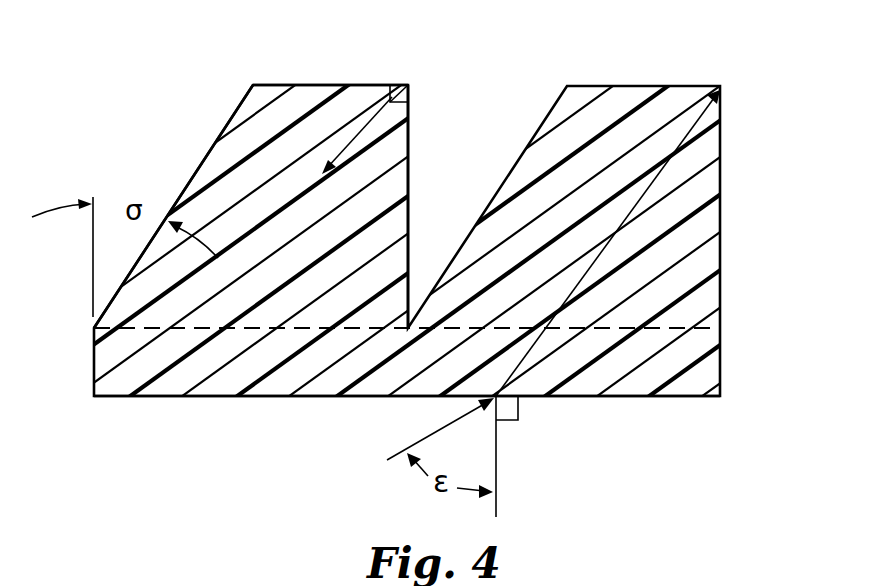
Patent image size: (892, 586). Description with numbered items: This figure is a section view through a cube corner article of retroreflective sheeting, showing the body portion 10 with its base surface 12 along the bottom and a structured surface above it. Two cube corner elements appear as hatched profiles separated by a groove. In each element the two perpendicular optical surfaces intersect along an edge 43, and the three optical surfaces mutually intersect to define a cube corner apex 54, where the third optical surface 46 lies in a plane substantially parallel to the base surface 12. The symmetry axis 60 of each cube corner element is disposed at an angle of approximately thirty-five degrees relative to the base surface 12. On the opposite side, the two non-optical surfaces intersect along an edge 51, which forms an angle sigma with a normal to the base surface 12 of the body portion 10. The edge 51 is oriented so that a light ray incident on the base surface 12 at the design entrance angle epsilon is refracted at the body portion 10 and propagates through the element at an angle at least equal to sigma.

The body portion 10 is at (720, 352).
The base surface 12 is at (653, 397).
The edge 43 is at (410, 137).
The third optical surface 46 is at (278, 85).
The edge 51 is at (202, 163).
The cube corner apex 54 is at (408, 85).
The symmetry axis 60 is at (363, 125).